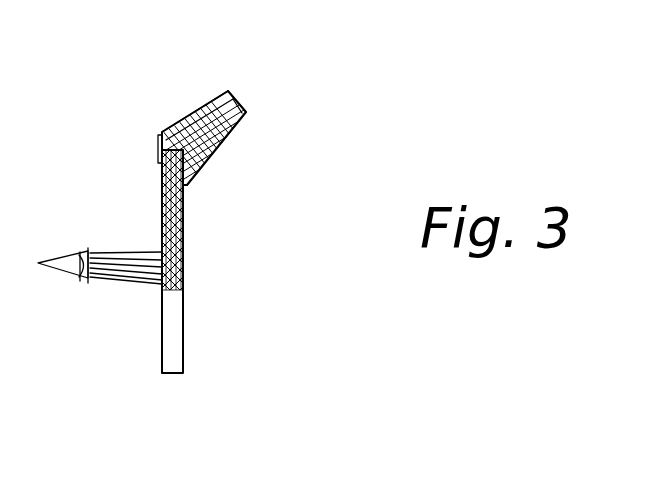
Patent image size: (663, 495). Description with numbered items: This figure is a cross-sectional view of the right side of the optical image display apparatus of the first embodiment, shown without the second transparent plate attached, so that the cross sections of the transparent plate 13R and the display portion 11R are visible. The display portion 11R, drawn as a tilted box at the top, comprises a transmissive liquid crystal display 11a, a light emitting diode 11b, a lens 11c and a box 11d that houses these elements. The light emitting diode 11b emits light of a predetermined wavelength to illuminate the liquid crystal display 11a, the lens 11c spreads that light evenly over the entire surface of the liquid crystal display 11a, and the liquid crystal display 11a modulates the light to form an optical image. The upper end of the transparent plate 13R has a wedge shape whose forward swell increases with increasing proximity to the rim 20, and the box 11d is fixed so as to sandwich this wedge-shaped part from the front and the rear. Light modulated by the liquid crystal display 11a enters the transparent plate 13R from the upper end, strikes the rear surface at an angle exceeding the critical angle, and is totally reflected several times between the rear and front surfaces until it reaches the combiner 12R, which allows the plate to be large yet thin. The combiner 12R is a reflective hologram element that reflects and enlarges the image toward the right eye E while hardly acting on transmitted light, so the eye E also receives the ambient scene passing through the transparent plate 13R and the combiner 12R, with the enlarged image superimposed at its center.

The display portion 11R is at (258, 112).
The transmissive liquid crystal display 11a is at (186, 108).
The light emitting diode 11b is at (218, 97).
The lens 11c is at (213, 97).
The box 11d is at (158, 135).
The combiner 12R is at (183, 275).
The transparent plate 13R is at (175, 313).
The rim 20 is at (172, 377).
The right eye E is at (70, 253).